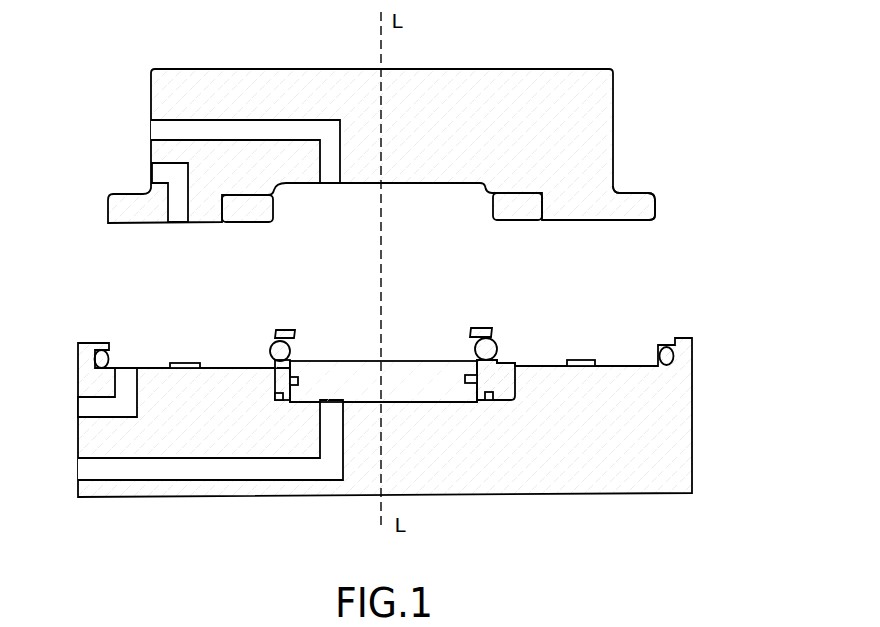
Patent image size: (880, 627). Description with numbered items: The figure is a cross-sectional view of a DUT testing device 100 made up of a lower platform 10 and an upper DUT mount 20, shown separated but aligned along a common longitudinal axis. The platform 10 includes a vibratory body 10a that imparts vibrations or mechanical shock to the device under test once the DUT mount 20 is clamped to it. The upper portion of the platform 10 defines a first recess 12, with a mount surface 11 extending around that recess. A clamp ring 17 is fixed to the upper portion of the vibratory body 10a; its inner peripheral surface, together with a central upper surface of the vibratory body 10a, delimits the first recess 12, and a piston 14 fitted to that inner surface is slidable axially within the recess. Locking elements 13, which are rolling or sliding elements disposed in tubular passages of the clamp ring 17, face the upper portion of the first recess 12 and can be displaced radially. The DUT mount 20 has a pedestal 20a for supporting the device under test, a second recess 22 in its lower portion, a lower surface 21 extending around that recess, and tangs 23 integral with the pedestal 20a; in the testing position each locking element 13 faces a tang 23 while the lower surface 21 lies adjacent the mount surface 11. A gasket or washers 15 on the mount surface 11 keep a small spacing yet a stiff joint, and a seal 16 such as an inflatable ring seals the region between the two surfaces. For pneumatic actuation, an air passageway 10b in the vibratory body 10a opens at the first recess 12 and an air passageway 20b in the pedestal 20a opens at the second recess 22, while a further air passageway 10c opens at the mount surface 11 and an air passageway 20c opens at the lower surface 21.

The test device 100 is at (561, 37).
The platform 10 is at (405, 412).
The vibratory body 10a is at (648, 473).
The air passageway 10b is at (153, 480).
The air passageway 10c is at (102, 419).
The mount surface 11 is at (616, 366).
The first recess 12 is at (400, 344).
The locking element 13 is at (497, 342).
The piston 14 is at (438, 388).
The gasket or washers 15 is at (185, 362).
The seal 16 is at (109, 363).
The clamp ring 17 is at (289, 329).
The DUT mount 20 is at (408, 143).
The pedestal 20a is at (592, 99).
The air passageway 20b is at (208, 121).
The air passageway 20c is at (168, 163).
The lower surface 21 is at (617, 220).
The second recess 22 is at (436, 203).
The tang 23 is at (520, 212).